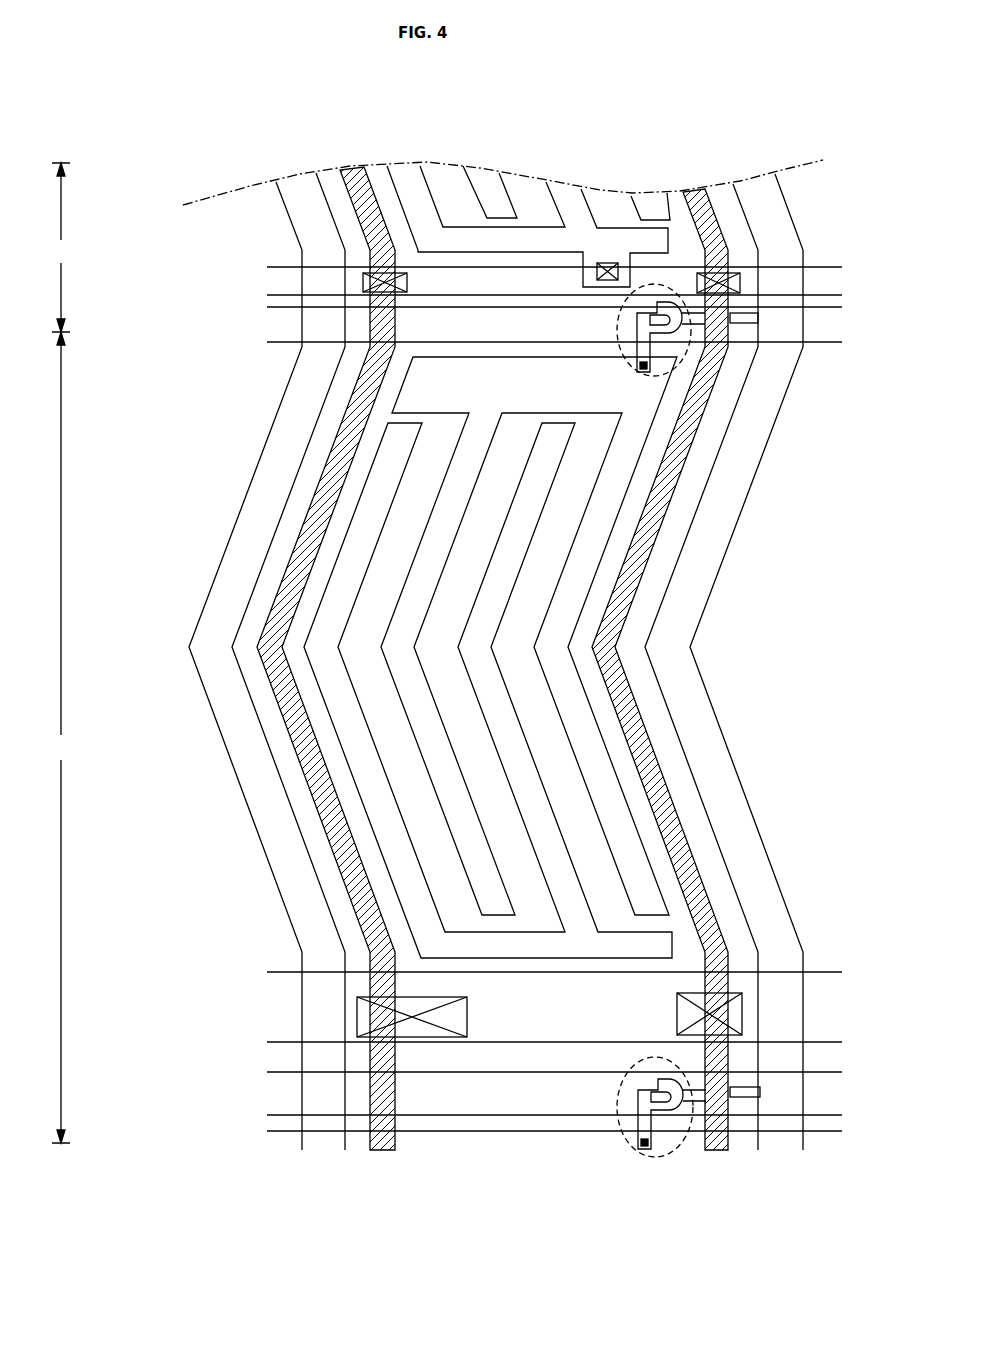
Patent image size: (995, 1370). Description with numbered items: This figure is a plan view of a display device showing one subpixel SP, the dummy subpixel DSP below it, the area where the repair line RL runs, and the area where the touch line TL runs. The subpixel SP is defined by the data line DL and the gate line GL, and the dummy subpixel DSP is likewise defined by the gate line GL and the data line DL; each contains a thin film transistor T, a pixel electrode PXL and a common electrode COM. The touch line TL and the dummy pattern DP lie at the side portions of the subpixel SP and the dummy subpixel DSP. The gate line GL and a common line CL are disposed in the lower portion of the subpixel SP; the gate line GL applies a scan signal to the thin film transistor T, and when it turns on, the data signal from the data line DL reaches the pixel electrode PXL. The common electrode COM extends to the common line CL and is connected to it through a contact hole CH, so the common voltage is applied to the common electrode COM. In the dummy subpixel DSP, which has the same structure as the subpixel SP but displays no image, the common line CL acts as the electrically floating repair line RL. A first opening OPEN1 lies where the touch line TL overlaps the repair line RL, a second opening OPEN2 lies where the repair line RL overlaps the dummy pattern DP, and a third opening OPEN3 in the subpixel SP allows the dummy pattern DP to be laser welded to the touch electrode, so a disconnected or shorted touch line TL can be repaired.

The subpixel SP is at (61, 247).
The dummy subpixel DSP is at (55, 737).
The common line CL is at (278, 280).
The gate line GL is at (280, 332).
The repair line RL is at (272, 1005).
The data line DL is at (218, 690).
The dummy pattern DP is at (318, 775).
The touch line TL is at (723, 912).
The common electrode COM is at (412, 182).
The pixel electrode PXL is at (482, 180).
The contact hole CH is at (612, 261).
The third opening OPEN3 is at (363, 285).
The second opening OPEN2 is at (422, 1037).
The first opening OPEN1 is at (743, 1013).
The thin film transistor T is at (681, 366).